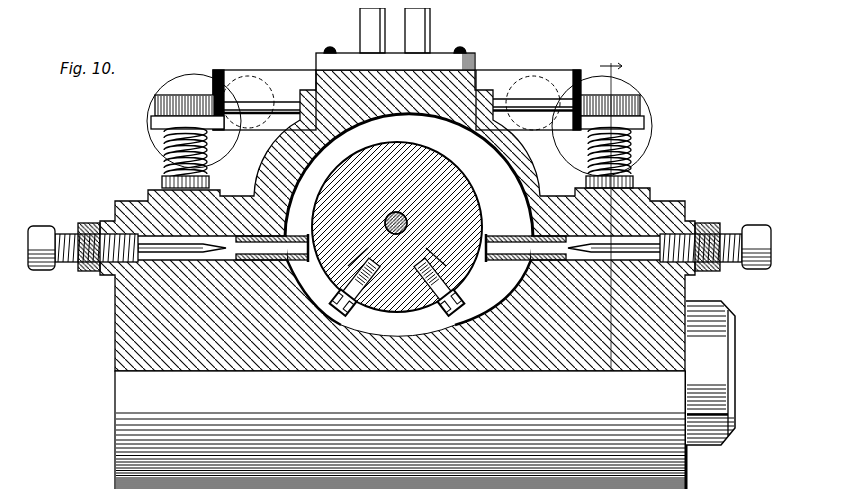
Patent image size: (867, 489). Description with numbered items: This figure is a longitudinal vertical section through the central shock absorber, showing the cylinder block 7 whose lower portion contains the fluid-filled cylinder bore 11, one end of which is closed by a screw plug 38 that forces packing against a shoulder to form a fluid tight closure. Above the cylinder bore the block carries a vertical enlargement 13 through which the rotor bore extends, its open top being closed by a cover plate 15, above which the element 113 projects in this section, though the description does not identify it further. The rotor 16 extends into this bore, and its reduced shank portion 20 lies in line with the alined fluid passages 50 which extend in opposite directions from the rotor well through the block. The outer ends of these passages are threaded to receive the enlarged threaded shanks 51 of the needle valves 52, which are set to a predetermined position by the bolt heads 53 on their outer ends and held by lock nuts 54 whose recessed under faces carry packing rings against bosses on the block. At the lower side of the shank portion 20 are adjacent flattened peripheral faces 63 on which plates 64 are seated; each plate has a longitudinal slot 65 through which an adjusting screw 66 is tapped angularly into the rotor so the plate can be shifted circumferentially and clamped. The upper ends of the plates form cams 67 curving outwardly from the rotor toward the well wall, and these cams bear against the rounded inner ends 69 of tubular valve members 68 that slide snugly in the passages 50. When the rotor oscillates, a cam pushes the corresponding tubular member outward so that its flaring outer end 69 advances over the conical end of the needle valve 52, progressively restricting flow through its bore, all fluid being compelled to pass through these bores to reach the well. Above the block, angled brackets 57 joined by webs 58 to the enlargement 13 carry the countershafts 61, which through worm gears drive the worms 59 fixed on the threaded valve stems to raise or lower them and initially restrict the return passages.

The cylinder block 7 is at (378, 430).
The cylinder bore 11 is at (662, 462).
The vertical enlargement 13 is at (440, 82).
The cover plate 15 is at (430, 50).
The rotor 16 is at (607, 221).
The shank portion 20 is at (455, 170).
The screw plug 38 is at (724, 324).
The fluid passages 50 is at (237, 204).
The threaded shanks 51 is at (145, 238).
The needle valves 52 is at (212, 248).
The bolt heads 53 is at (30, 220).
The lock nuts 54 is at (78, 216).
The angled brackets 57 is at (150, 116).
The webs 58 is at (268, 72).
The worms 59 is at (168, 90).
The countershafts 61 is at (232, 93).
The flattened peripheral faces 63 is at (347, 230).
The plates 64 is at (362, 312).
The longitudinal slots 65 is at (342, 252).
The adjusting screws 66 is at (448, 308).
The cams 67 is at (300, 274).
The tubular valve members 68 is at (258, 190).
The rounded inner ends / flaring outer ends 69 is at (307, 223).
The pipe 113 is at (352, 14).